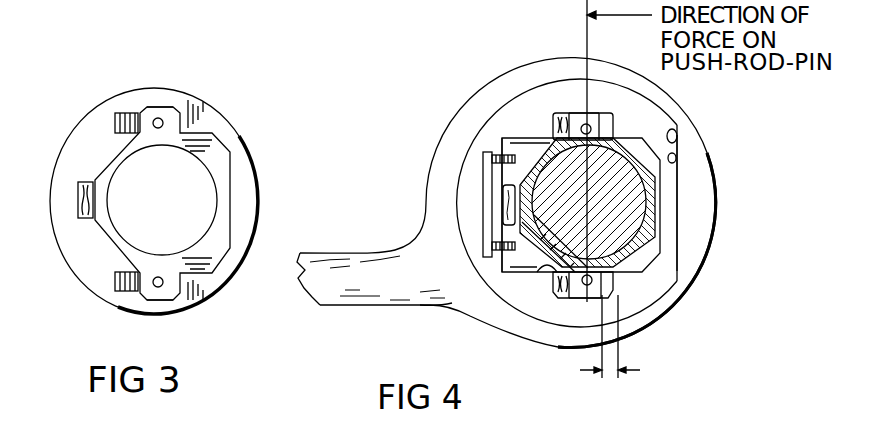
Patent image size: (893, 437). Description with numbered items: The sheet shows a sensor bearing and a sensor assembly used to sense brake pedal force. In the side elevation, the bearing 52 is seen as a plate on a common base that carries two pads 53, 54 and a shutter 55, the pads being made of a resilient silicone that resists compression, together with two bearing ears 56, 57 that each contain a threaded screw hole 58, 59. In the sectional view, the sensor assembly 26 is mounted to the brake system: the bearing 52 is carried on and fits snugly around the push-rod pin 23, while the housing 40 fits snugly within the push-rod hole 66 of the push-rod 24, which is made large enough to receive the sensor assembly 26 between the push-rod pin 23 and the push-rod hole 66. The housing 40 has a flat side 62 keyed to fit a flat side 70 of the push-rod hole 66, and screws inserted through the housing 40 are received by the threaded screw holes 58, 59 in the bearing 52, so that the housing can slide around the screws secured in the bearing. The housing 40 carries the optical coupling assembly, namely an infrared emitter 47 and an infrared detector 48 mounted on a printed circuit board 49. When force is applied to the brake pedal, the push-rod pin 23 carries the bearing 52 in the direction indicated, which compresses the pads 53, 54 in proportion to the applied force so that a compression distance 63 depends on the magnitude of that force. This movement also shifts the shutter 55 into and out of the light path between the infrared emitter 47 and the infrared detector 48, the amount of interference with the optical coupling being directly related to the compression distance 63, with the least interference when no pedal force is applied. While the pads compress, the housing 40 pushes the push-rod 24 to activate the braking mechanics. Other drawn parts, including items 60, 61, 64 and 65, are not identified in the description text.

In FIG. 4, the push-rod pin 23 is at (632, 207).
In FIG. 4, the push-rod 24 is at (577, 56).
In FIG. 4, the sensor assembly 26 is at (668, 117).
In FIG. 4, the housing 40 is at (677, 260).
In FIG. 4, the infrared emitter 47 is at (498, 152).
In FIG. 4, the infrared detector 48 is at (450, 303).
In FIG. 4, the printed circuit board 49 is at (482, 197).
In FIG. 3, the bearing 52 is at (210, 145).
In FIG. 4, the bearing 52 is at (523, 175).
In FIG. 3, the pad 53 is at (116, 118).
In FIG. 4, the pad 53 is at (553, 123).
In FIG. 3, the pad 54 is at (114, 279).
In FIG. 4, the pad 54 is at (568, 279).
In FIG. 3, the shutter 55 is at (78, 200).
In FIG. 4, the shutter 55 is at (503, 203).
In FIG. 3, the bearing ear 56 is at (165, 106).
In FIG. 4, the bearing ear 56 is at (581, 113).
In FIG. 3, the bearing ear 57 is at (165, 301).
In FIG. 4, the bearing ear 57 is at (572, 299).
In FIG. 3, the screw hole 58 is at (157, 117).
In FIG. 4, the screw hole 58 is at (595, 126).
In FIG. 3, the screw hole 59 is at (158, 287).
In FIG. 4, the screw hole 59 is at (615, 281).
In FIG. 4, the bracket 60 is at (502, 138).
In FIG. 4, the bushing 61 is at (502, 270).
In FIG. 4, the flat side 62 is at (678, 177).
In FIG. 4, the compression distance 63 is at (676, 350).
In FIG. 4, the lower bolt shank 64 is at (550, 135).
In FIG. 4, the strap 65 is at (543, 268).
In FIG. 4, the push-rod hole 66 is at (677, 143).
In FIG. 4, the flat side 70 is at (676, 163).